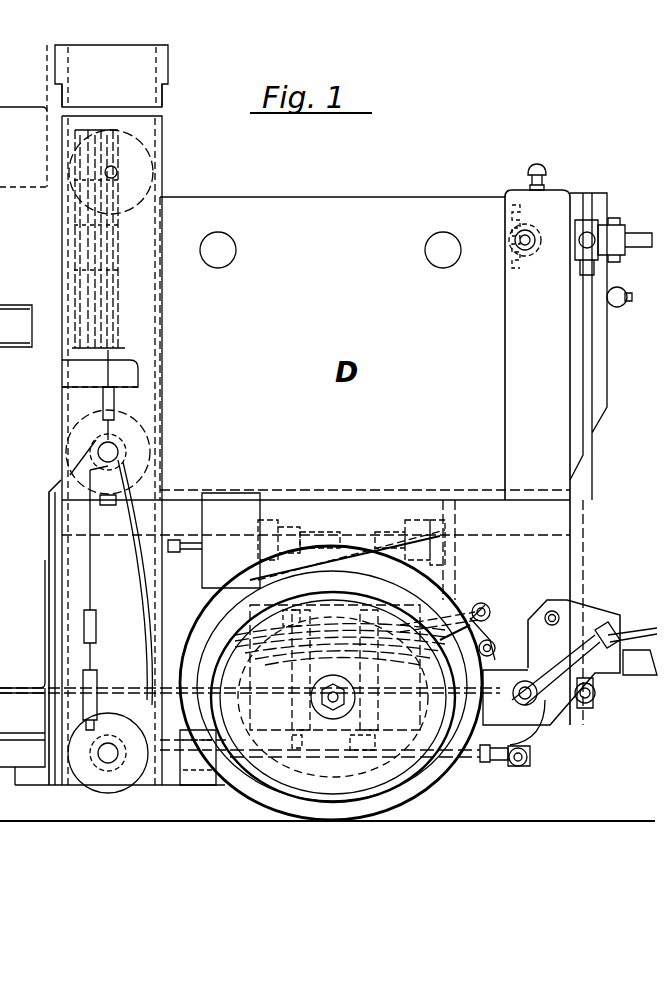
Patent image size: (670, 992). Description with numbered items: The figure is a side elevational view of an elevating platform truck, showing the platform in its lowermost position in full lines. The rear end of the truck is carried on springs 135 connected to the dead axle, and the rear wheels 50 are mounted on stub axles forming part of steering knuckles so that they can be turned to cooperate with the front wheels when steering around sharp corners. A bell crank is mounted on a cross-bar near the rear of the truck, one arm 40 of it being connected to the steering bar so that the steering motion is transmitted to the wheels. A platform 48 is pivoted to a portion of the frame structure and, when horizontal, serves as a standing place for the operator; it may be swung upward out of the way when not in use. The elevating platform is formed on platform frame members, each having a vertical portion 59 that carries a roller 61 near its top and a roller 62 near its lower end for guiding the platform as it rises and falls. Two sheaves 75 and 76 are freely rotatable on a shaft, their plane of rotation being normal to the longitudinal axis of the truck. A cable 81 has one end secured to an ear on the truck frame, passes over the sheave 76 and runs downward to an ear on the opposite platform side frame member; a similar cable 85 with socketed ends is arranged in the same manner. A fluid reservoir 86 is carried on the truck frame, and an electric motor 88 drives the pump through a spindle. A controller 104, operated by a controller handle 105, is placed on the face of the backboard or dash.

The bell crank arm 40 is at (530, 752).
The platform 48 is at (612, 672).
The rear wheels 50 is at (258, 783).
The vertical portion 59 is at (49, 572).
The roller 61 is at (140, 458).
The roller 62 is at (110, 787).
The sheave 75 is at (85, 138).
The sheave 76 is at (120, 142).
The cable 81 is at (90, 405).
The cable 85 is at (115, 368).
The fluid reservoir 86 is at (198, 757).
The electric motor 88 is at (460, 510).
The controller 104 is at (560, 195).
The controller handle 105 is at (545, 165).
The springs 135 is at (334, 634).